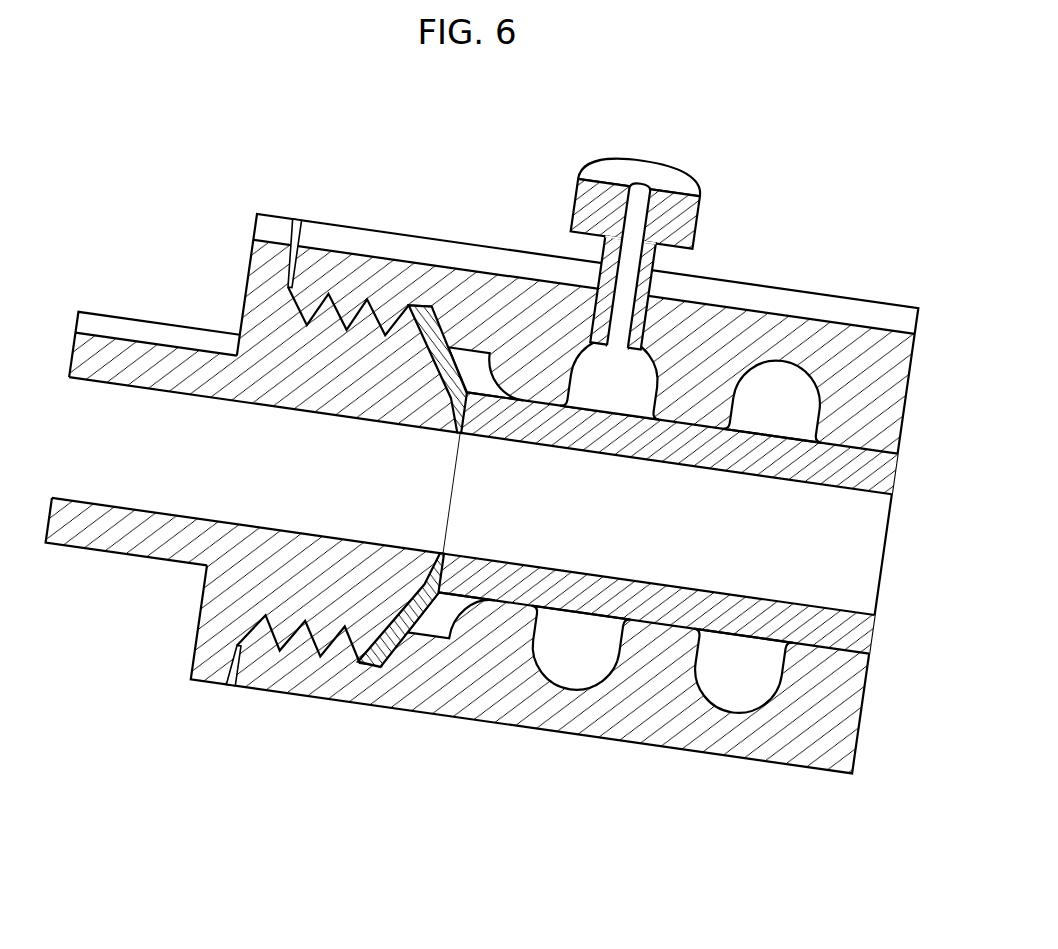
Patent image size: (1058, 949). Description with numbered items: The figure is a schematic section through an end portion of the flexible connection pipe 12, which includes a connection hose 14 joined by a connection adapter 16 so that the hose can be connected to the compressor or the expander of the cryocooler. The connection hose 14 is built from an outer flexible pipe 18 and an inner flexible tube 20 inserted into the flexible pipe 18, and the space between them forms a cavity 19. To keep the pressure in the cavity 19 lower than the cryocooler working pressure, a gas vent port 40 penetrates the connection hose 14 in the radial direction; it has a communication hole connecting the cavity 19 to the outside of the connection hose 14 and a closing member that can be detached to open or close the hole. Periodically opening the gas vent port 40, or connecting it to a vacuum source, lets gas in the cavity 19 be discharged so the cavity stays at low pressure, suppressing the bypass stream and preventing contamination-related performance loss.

The flexible connection pipe 12 is at (491, 490).
The connection hose 14 is at (572, 460).
The connection adapter 16 is at (122, 310).
The flexible pipe 18 is at (862, 294).
The cavity 19 is at (609, 403).
The flexible tube 20 is at (803, 436).
The gas vent port 40 is at (611, 157).